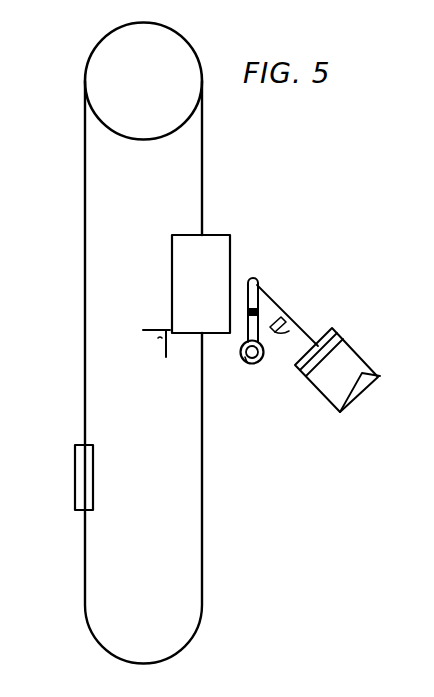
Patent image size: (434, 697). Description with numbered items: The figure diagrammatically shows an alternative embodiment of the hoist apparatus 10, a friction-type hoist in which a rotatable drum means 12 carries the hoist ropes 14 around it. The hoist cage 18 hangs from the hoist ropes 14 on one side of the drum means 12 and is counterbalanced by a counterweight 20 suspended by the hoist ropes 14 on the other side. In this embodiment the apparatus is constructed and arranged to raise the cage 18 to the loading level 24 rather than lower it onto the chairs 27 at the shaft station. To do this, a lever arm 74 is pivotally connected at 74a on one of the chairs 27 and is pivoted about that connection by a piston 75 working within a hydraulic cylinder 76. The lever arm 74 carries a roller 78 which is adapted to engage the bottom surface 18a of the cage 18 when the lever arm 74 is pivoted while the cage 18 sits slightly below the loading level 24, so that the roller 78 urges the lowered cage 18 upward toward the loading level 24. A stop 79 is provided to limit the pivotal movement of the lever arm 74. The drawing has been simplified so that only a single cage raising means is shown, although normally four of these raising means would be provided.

The hoist apparatus 10 is at (265, 134).
The rotatable drum means 12 is at (178, 47).
The hoist ropes 14 is at (203, 508).
The hoist cage 18 is at (232, 239).
The bottom surface of the cage 18a is at (187, 333).
The counterweight 20 is at (80, 497).
The loading level 24 is at (158, 329).
The chairs 27 is at (163, 338).
The lever arm 74 is at (243, 300).
The pivotal connection 74a is at (263, 343).
The piston 75 is at (336, 348).
The hydraulic cylinder 76 is at (405, 367).
The roller 78 is at (245, 357).
The stop 79 is at (315, 314).